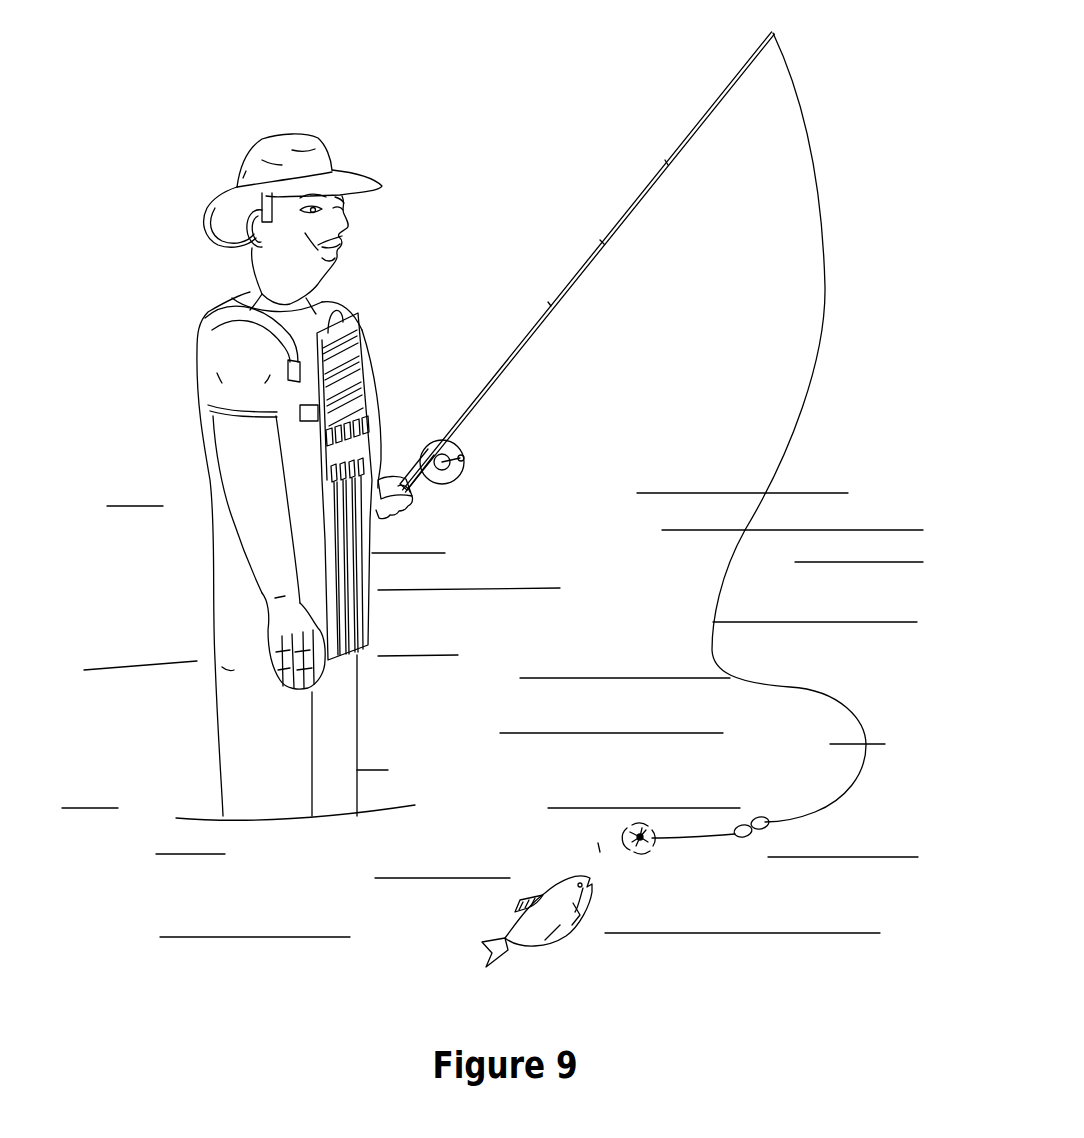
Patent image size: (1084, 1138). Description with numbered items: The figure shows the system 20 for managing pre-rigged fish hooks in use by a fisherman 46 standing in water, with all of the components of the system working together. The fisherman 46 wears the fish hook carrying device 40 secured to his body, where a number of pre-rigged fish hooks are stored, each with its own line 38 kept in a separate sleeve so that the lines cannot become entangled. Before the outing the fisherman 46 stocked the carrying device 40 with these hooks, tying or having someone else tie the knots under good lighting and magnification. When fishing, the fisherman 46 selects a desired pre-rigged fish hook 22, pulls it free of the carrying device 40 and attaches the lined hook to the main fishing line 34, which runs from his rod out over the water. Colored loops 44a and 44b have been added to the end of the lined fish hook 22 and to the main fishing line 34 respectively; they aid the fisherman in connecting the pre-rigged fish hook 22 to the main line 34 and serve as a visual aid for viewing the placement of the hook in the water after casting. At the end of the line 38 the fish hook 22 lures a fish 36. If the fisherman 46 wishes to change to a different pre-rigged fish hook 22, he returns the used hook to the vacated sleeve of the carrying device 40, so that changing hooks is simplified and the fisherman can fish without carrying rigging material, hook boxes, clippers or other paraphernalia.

The system for managing pre-rigged fish hooks 20 is at (470, 145).
The pre-rigged fish hook 22 is at (642, 853).
The main fishing line 34 is at (820, 216).
The fish 36 is at (515, 930).
The line 38 is at (690, 835).
The fish hook carrying device 40 is at (347, 322).
The colored loop 44a is at (740, 838).
The colored loop 44b is at (760, 818).
The fisherman 46 is at (281, 763).